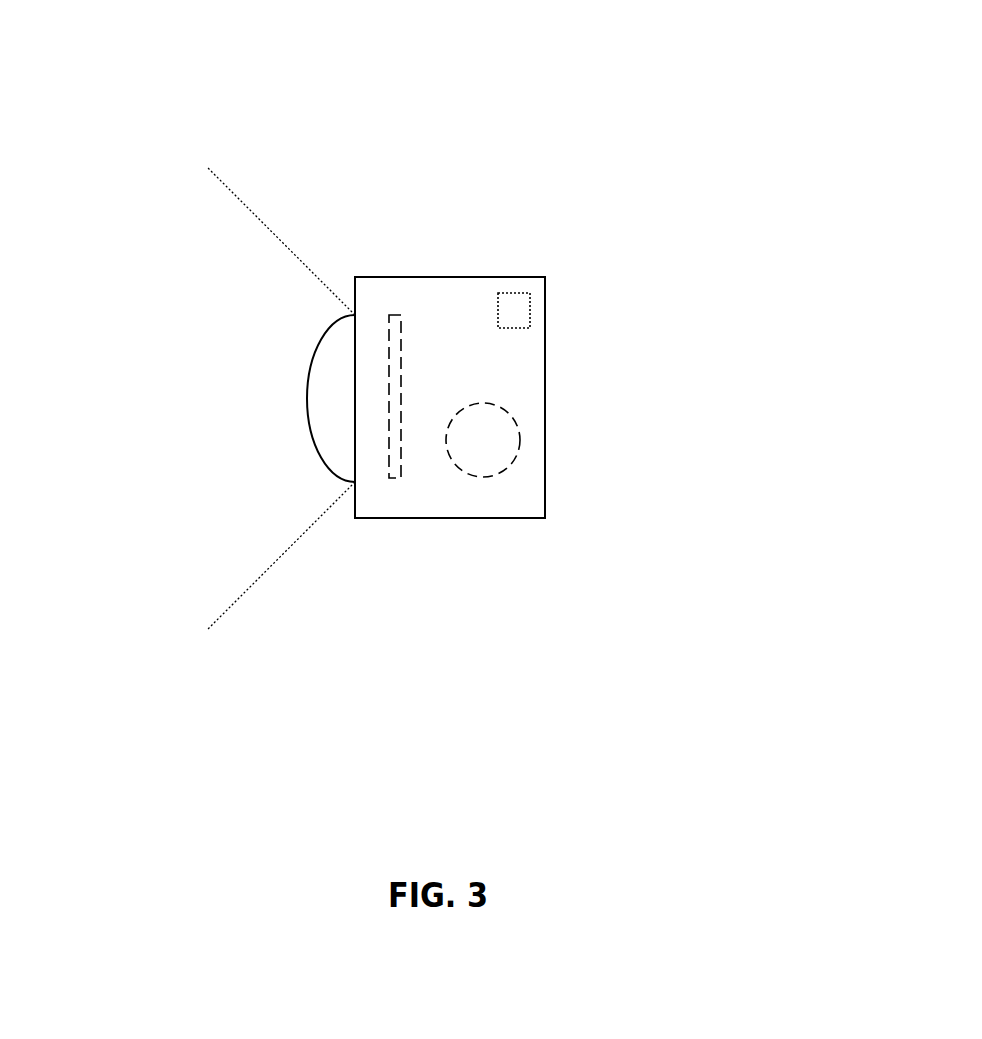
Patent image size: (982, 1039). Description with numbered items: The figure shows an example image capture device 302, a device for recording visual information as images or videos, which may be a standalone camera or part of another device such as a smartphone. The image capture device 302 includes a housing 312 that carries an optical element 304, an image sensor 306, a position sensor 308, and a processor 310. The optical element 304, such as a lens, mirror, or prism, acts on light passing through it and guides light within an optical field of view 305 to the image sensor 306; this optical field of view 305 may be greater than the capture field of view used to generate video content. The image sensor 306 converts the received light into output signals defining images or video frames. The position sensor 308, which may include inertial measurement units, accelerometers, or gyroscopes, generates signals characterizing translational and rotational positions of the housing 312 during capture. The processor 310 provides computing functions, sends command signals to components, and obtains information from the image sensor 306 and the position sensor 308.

The image capture device 302 is at (508, 145).
The optical element 304 is at (328, 468).
The optical field of view 305 is at (296, 265).
The image sensor 306 is at (400, 315).
The position sensor 308 is at (528, 313).
The processor 310 is at (520, 440).
The housing 312 is at (462, 518).